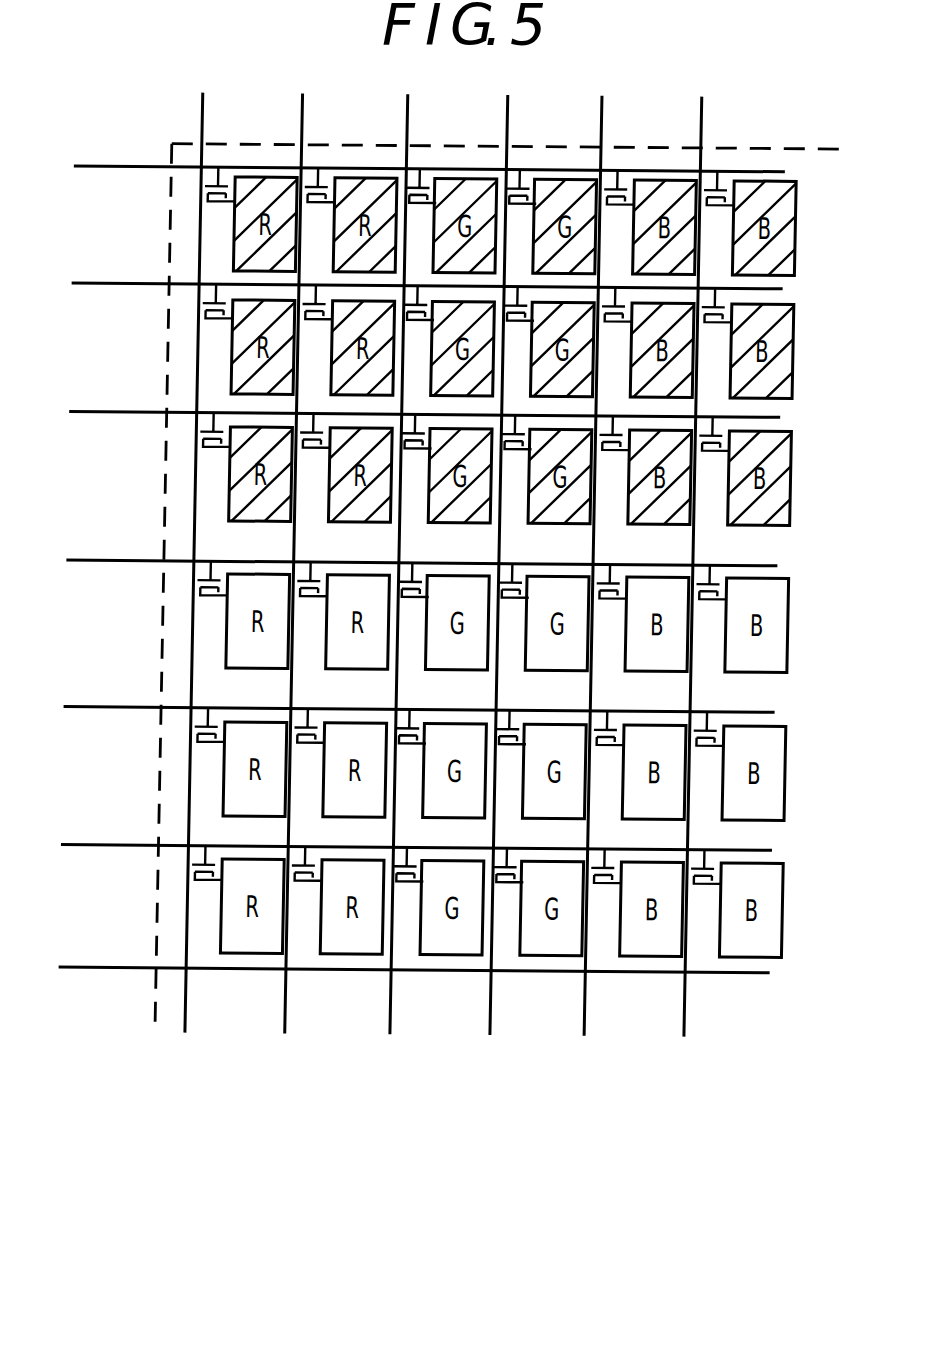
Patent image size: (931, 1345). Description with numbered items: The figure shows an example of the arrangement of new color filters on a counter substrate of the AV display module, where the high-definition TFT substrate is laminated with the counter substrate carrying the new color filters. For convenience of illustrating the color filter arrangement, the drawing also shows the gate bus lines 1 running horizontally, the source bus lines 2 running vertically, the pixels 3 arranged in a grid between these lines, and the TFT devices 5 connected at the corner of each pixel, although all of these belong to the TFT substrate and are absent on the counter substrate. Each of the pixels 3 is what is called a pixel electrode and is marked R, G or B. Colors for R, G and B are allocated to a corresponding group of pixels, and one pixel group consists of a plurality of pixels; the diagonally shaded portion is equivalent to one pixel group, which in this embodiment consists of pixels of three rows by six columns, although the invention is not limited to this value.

The gate bus line 1 is at (128, 978).
The source bus line 2 is at (487, 1027).
The pixel 3 is at (740, 948).
The TFT device 5 is at (310, 893).